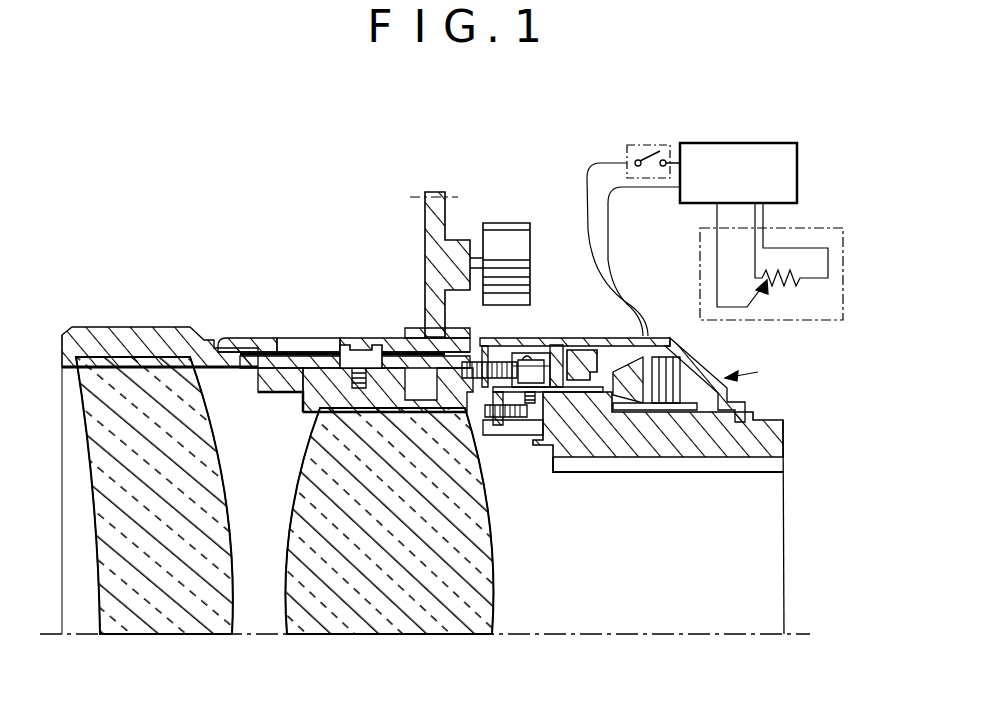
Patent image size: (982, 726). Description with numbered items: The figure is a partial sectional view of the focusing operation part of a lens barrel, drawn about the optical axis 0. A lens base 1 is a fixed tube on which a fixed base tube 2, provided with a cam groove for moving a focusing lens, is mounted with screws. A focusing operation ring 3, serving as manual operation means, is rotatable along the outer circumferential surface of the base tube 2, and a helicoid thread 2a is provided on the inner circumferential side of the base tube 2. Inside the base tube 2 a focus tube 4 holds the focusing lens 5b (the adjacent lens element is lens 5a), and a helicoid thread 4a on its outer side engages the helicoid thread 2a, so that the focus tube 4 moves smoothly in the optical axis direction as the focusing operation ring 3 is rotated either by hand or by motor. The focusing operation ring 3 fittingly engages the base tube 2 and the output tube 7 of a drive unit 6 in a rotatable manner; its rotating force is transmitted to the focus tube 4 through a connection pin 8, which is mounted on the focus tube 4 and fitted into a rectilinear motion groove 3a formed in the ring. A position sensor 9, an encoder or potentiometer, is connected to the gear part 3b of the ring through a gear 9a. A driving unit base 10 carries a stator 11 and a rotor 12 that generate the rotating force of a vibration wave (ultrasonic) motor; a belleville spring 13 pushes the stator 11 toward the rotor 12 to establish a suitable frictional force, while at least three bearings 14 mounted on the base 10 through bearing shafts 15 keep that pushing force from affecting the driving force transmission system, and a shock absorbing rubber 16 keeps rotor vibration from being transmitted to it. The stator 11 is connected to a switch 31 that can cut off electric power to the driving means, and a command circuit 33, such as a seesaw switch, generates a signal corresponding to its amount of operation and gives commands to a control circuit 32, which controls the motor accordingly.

The rotation axis 0 is at (580, 632).
The lens base 1 is at (595, 445).
The fixed base tube 2 is at (118, 330).
The helicoid thread 2a is at (280, 392).
The focusing operation ring 3 is at (236, 338).
The rectilinear motion groove 3a is at (318, 342).
The gear part 3b is at (412, 328).
The focus tube 4 is at (296, 410).
The helicoid thread 4a is at (290, 354).
The first tooth 5a is at (188, 630).
The focusing lens 5b is at (315, 630).
The drive unit 6 is at (755, 362).
The output tube 7 is at (520, 350).
The connection pin 8 is at (372, 352).
The position sensor 9 is at (508, 222).
The gear 9a is at (424, 222).
The driving unit base 10 is at (690, 432).
The stator 11 is at (630, 404).
The rotor 12 is at (585, 340).
The belleville spring 13 is at (672, 364).
The bearings 14 is at (500, 400).
The bearing shafts 15 is at (515, 385).
The shock absorbing rubber 16 is at (560, 346).
The switch 31 is at (642, 143).
The control circuit 32 is at (730, 143).
The command circuit 33 is at (820, 320).